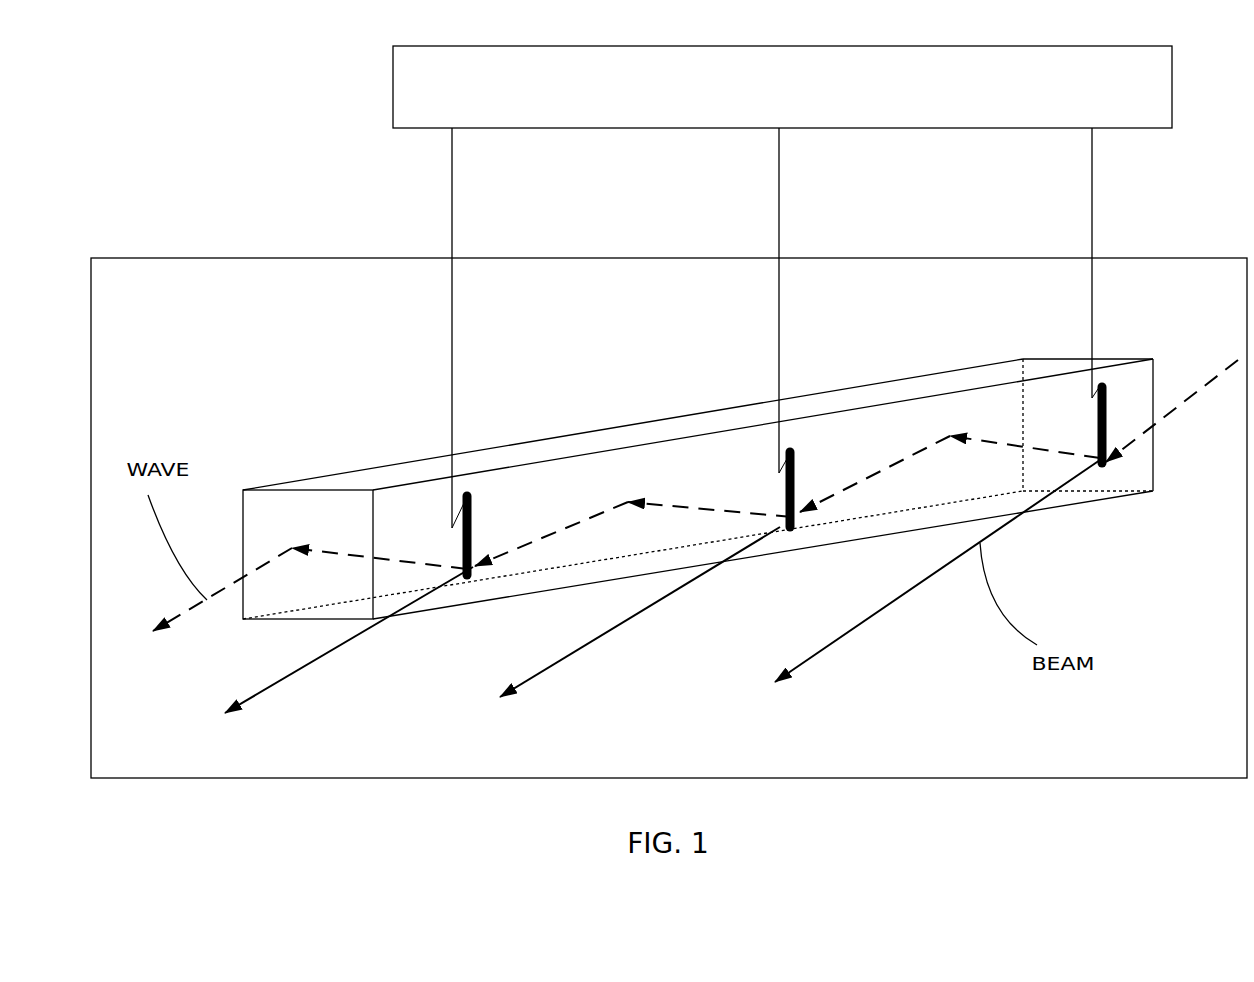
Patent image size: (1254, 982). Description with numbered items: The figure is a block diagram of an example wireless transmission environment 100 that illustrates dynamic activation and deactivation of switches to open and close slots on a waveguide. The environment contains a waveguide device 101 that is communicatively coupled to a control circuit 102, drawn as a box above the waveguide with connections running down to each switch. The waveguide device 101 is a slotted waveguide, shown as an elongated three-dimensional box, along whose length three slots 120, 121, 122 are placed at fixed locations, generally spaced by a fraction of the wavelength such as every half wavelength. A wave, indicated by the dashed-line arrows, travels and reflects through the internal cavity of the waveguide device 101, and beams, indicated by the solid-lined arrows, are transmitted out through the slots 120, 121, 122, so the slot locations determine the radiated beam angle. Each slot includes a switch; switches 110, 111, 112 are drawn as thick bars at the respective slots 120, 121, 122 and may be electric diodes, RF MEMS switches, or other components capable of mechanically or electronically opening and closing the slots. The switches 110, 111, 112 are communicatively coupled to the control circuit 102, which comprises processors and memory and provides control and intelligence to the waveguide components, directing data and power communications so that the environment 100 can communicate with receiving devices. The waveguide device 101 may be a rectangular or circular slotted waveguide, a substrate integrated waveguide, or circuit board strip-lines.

The wireless transmission environment 100 is at (282, 88).
The waveguide device 101 is at (656, 755).
The control circuit 102 is at (775, 110).
The switch 110 is at (457, 557).
The switch 111 is at (778, 507).
The switch 112 is at (1093, 445).
The slot 120 is at (478, 548).
The slot 121 is at (798, 505).
The slot 122 is at (1108, 435).